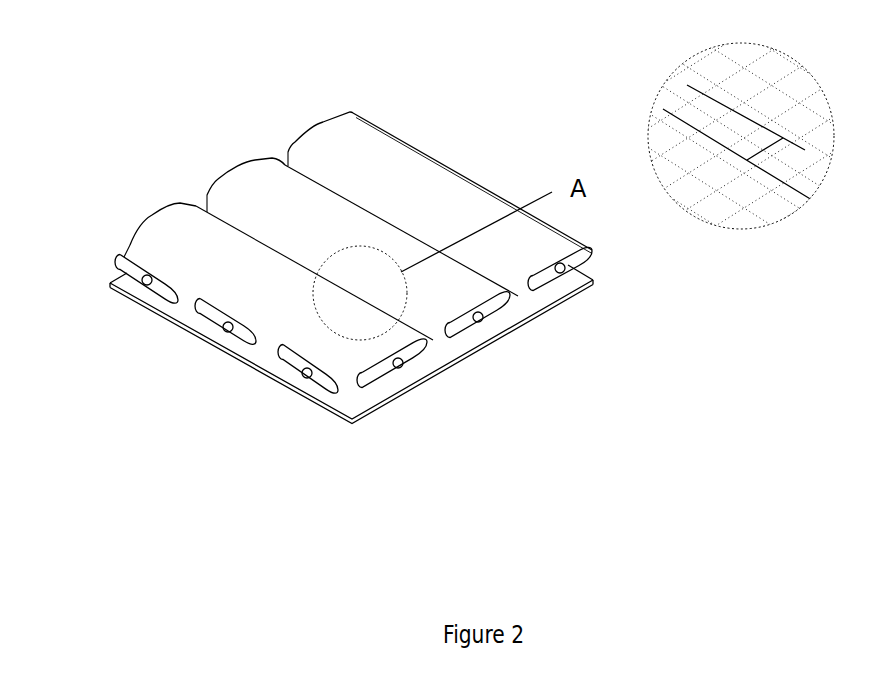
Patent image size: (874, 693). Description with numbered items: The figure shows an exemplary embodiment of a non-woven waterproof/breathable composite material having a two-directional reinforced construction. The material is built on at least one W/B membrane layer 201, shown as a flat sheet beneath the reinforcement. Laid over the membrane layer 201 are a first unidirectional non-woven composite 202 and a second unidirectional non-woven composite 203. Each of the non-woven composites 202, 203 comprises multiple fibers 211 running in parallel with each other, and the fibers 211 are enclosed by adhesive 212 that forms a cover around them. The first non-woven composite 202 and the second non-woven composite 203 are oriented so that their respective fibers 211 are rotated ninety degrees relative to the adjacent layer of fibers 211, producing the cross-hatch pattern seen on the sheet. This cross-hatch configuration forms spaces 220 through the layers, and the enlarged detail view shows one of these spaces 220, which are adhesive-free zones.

The W/B membrane layer 201 is at (452, 350).
The first unidirectional non-woven composite 202 is at (132, 256).
The second unidirectional non-woven composite 203 is at (148, 235).
The fibers 211 is at (306, 376).
The adhesive 212 is at (383, 373).
The spaces 220 is at (804, 149).